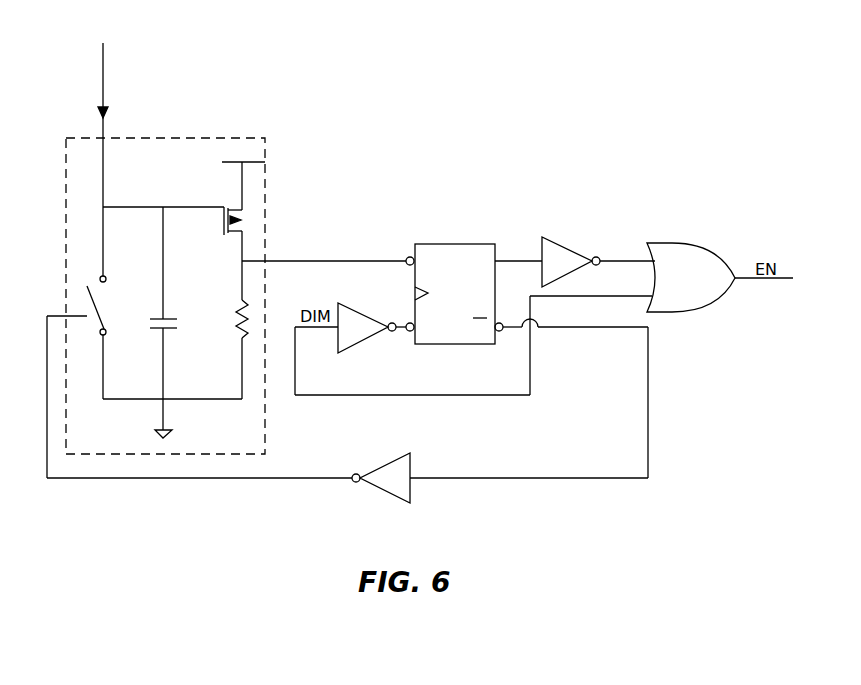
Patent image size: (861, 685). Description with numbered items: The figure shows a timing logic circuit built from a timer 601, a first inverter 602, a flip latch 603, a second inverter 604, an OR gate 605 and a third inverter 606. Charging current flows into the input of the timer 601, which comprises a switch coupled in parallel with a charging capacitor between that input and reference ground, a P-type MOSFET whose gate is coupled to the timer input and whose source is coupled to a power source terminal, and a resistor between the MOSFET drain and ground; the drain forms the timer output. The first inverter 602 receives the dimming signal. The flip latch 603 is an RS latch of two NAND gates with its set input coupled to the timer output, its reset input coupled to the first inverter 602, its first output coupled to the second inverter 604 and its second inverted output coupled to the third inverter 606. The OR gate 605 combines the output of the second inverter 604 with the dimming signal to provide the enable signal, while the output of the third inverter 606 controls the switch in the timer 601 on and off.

The timer 601 is at (187, 138).
The first inverter 602 is at (358, 323).
The flip latch 603 is at (448, 244).
The second inverter 604 is at (568, 252).
The OR gate 605 is at (689, 270).
The third inverter 606 is at (383, 473).